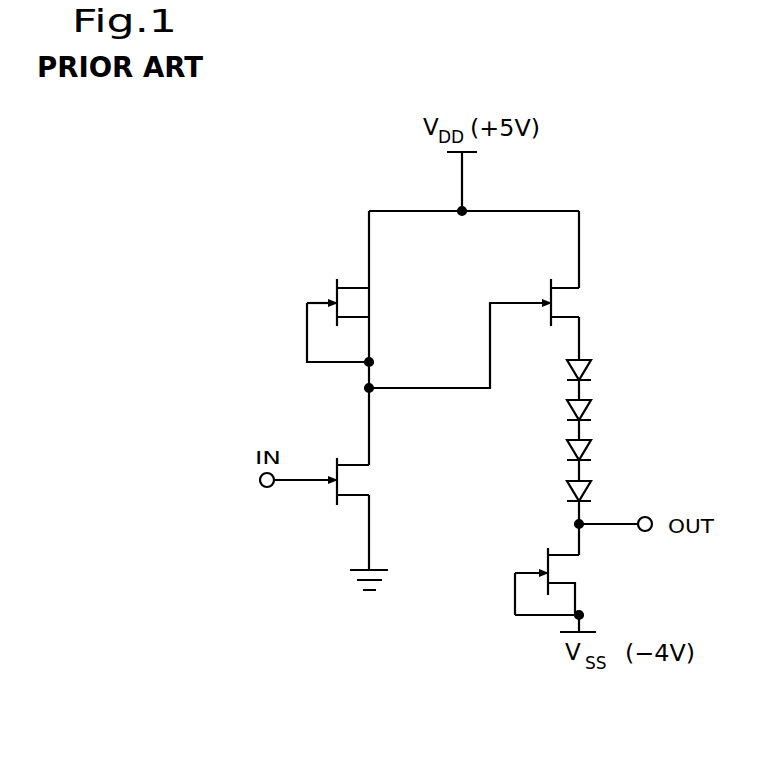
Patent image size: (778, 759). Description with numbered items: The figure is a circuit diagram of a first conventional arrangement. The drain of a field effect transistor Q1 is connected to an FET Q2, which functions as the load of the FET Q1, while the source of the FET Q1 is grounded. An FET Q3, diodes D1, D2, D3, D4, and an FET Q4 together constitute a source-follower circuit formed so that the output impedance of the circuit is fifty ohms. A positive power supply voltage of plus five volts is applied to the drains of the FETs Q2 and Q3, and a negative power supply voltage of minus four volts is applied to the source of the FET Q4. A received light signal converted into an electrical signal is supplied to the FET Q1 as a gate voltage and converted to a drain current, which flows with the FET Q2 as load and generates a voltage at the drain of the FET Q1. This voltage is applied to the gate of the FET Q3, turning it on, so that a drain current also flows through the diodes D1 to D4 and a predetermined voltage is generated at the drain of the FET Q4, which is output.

The field effect transistor Q1 is at (332, 483).
The FET Q2 is at (355, 320).
The FET Q3 is at (583, 285).
The FET Q4 is at (563, 583).
The diode D1 is at (600, 380).
The diode D2 is at (601, 420).
The diode D3 is at (601, 460).
The diode D4 is at (601, 518).